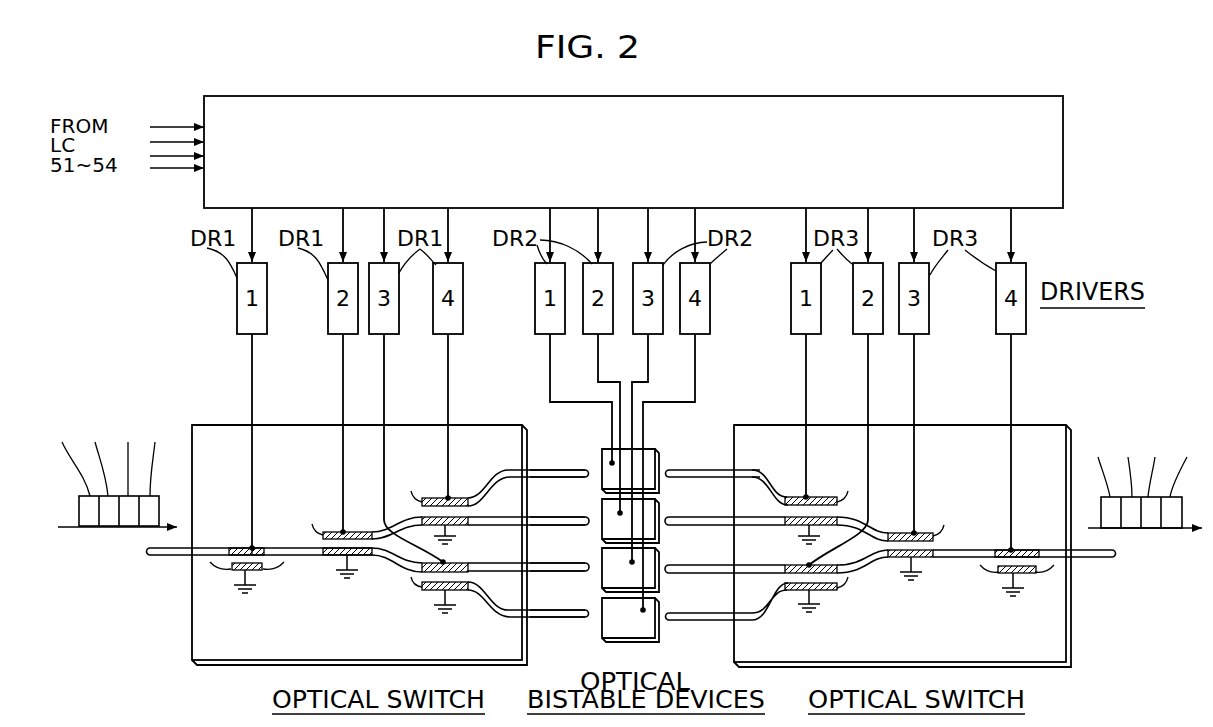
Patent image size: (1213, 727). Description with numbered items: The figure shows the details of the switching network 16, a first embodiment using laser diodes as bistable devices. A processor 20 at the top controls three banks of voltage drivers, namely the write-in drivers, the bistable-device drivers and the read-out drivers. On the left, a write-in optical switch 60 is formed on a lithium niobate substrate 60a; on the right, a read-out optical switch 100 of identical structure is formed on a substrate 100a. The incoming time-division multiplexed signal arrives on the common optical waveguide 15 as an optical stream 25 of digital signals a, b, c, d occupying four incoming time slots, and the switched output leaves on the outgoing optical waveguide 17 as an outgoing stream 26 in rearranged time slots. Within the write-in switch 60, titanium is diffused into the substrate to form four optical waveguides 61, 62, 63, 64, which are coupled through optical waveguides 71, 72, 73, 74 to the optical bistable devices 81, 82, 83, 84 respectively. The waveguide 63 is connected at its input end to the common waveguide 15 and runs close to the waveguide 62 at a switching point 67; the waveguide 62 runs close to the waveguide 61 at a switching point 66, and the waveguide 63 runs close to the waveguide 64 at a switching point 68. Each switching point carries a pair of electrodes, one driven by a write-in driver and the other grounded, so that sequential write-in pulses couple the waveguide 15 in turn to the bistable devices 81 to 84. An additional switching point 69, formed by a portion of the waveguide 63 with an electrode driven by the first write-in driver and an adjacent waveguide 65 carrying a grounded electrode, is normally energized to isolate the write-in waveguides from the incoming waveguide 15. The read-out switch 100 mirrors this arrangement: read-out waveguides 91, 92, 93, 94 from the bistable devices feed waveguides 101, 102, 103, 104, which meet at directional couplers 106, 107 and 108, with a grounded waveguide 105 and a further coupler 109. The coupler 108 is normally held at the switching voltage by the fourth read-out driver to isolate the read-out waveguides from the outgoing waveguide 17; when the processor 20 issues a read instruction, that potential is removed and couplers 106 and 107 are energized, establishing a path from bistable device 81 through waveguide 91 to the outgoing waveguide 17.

The processor 20 is at (1038, 96).
The switching network 16 is at (152, 328).
The write-in optical switch 60 is at (242, 422).
The substrate of first optical switch 60a is at (287, 424).
The read-out optical switch 100 is at (923, 423).
The substrate of second optical switch 100a is at (1043, 425).
The common optical waveguide 15 is at (158, 557).
The outgoing optical waveguide 17 is at (1093, 560).
The optical stream 25 is at (108, 528).
The output optical signal train 26 is at (1152, 530).
The optical waveguide 61 is at (481, 484).
The optical waveguide 62 is at (480, 517).
The optical waveguide 63 is at (210, 547).
The optical waveguide 64 is at (487, 617).
The adjacent waveguide 65 is at (233, 570).
The switching point 66 is at (430, 497).
The switching point 67 is at (338, 548).
The switching point 68 is at (418, 582).
The additional switching point 69 is at (258, 571).
The optical waveguide 71 is at (553, 468).
The optical waveguide 72 is at (562, 517).
The optical waveguide 73 is at (560, 563).
The optical waveguide 74 is at (560, 612).
The optical bistable device 81 is at (652, 450).
The optical bistable device 82 is at (660, 517).
The optical bistable device 83 is at (660, 565).
The optical bistable device 84 is at (660, 614).
The read-out waveguide 91 is at (707, 468).
The read-out waveguide 92 is at (695, 517).
The read-out waveguide 93 is at (697, 566).
The read-out waveguide 94 is at (697, 614).
The optical waveguide 101 is at (753, 469).
The optical waveguide 102 is at (745, 517).
The optical waveguide 103 is at (747, 565).
The optical waveguide 104 is at (757, 620).
The ground electrode 105 is at (1034, 575).
The directional coupler 106 is at (822, 508).
The directional coupler 107 is at (920, 548).
The directional coupler 108 is at (998, 568).
The electrode 109 is at (823, 589).